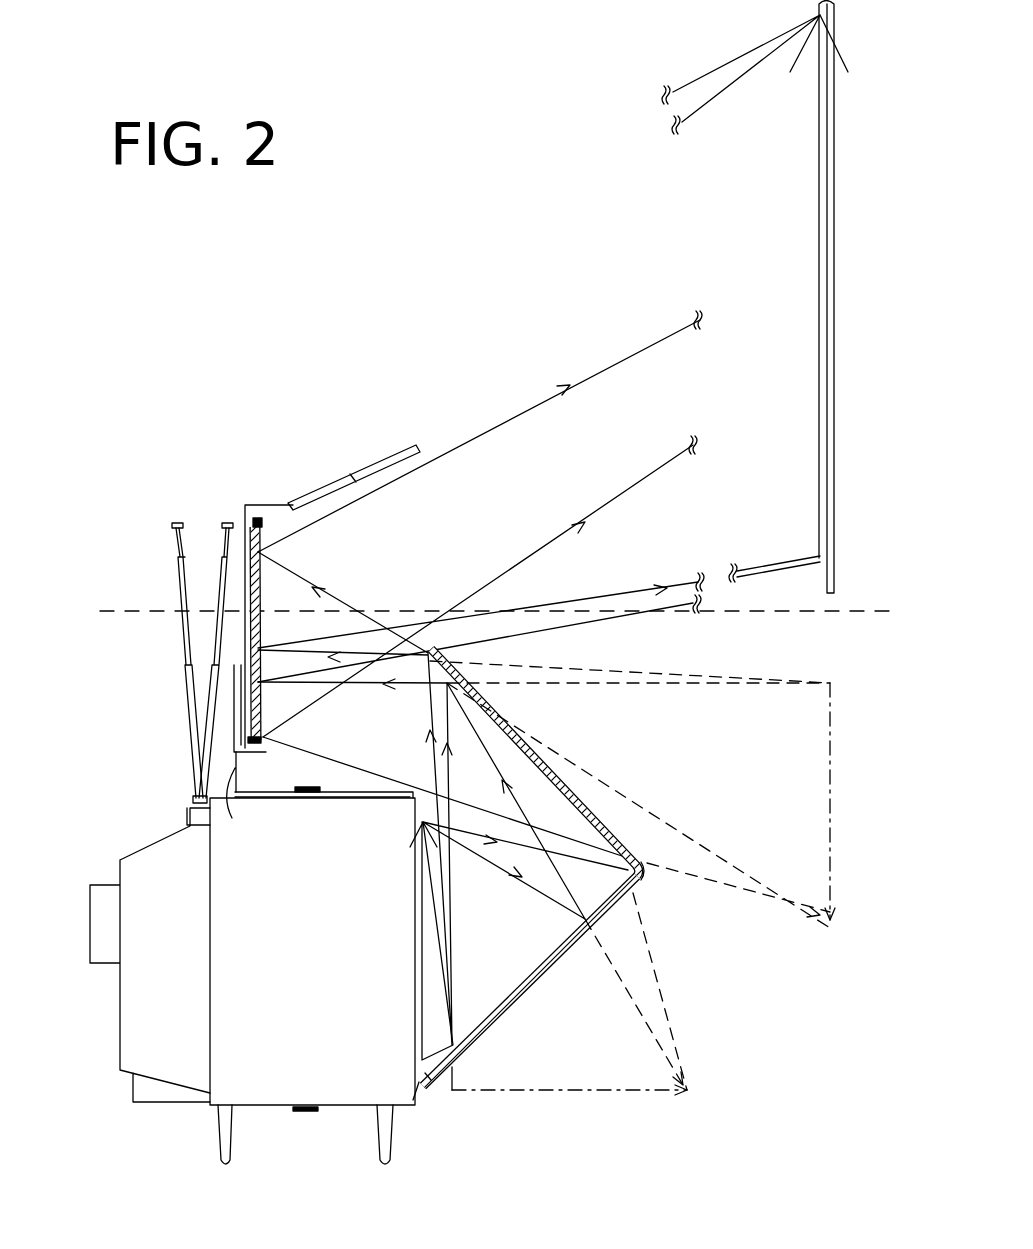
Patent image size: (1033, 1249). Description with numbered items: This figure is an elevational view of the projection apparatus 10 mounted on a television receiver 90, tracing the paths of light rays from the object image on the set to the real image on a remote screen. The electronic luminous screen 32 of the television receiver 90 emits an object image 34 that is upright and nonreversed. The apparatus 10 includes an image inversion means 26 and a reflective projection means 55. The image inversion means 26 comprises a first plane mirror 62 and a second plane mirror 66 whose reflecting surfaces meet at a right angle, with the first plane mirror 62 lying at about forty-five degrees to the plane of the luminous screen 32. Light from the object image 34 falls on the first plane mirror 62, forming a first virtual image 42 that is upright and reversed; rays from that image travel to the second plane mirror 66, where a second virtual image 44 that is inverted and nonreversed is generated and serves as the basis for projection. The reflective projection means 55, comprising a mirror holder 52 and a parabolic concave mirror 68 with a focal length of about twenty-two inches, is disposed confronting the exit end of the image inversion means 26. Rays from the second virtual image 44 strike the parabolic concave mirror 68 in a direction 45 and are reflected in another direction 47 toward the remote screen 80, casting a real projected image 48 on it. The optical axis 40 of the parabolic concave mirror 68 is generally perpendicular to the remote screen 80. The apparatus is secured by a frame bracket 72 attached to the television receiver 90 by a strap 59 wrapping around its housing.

The apparatus 10 is at (720, 970).
The image inversion means 26 is at (654, 904).
The luminous screen 32 is at (415, 952).
The object image 34 is at (423, 975).
The optical axis 40 is at (142, 610).
The first virtual image 42 is at (540, 1092).
The second virtual image 44 is at (828, 785).
The direction 45 is at (361, 709).
The direction 47 is at (417, 547).
The real projected image 48 is at (818, 320).
The mirror holder 52 is at (266, 746).
The reflective projection means 55 is at (249, 490).
The strap 59 is at (300, 1112).
The first plane mirror 62 is at (533, 967).
The second plane mirror 66 is at (548, 782).
The parabolic concave mirror 68 is at (262, 570).
The frame bracket 72 is at (232, 818).
The remote screen 80 is at (820, 566).
The television receiver 90 is at (309, 973).